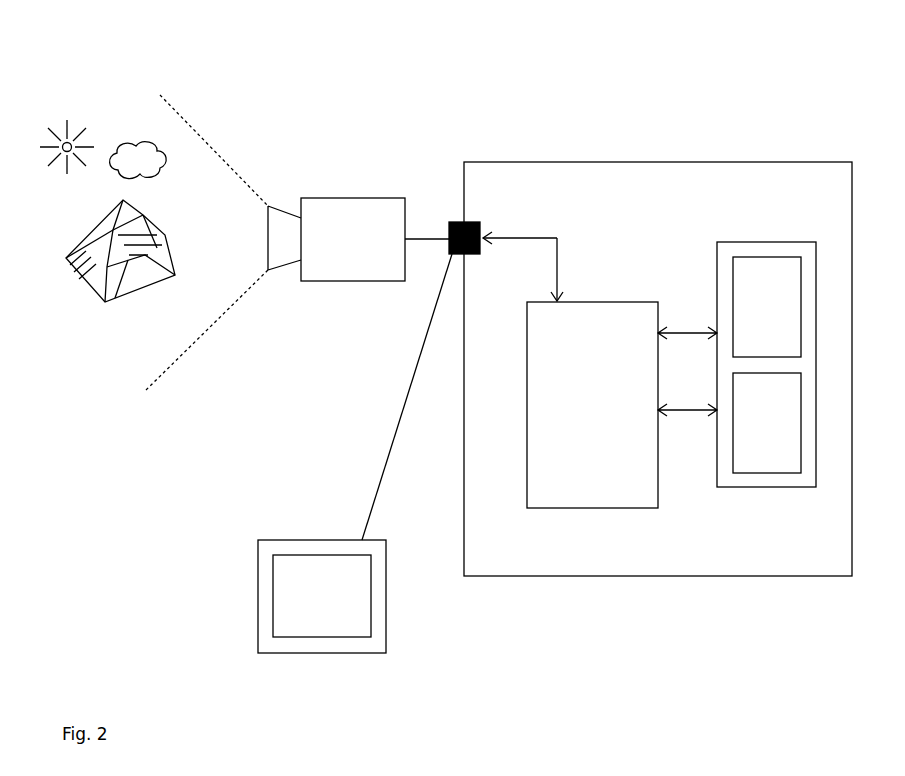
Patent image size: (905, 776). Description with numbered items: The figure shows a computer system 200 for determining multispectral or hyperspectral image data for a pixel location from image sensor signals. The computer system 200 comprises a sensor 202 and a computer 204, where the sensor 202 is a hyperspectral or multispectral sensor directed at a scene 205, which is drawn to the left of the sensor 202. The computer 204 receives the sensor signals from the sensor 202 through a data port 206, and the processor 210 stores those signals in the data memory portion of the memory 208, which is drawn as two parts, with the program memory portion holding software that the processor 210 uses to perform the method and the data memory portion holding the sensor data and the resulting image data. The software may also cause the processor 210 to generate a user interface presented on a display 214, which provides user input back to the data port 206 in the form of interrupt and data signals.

The computer system 200 is at (766, 76).
The sensor 202 is at (362, 281).
The computer 204 is at (680, 577).
The scene 205 is at (84, 98).
The data port 206 is at (460, 222).
The memory 208 is at (778, 242).
The processor 210 is at (580, 508).
The display 214 is at (387, 612).